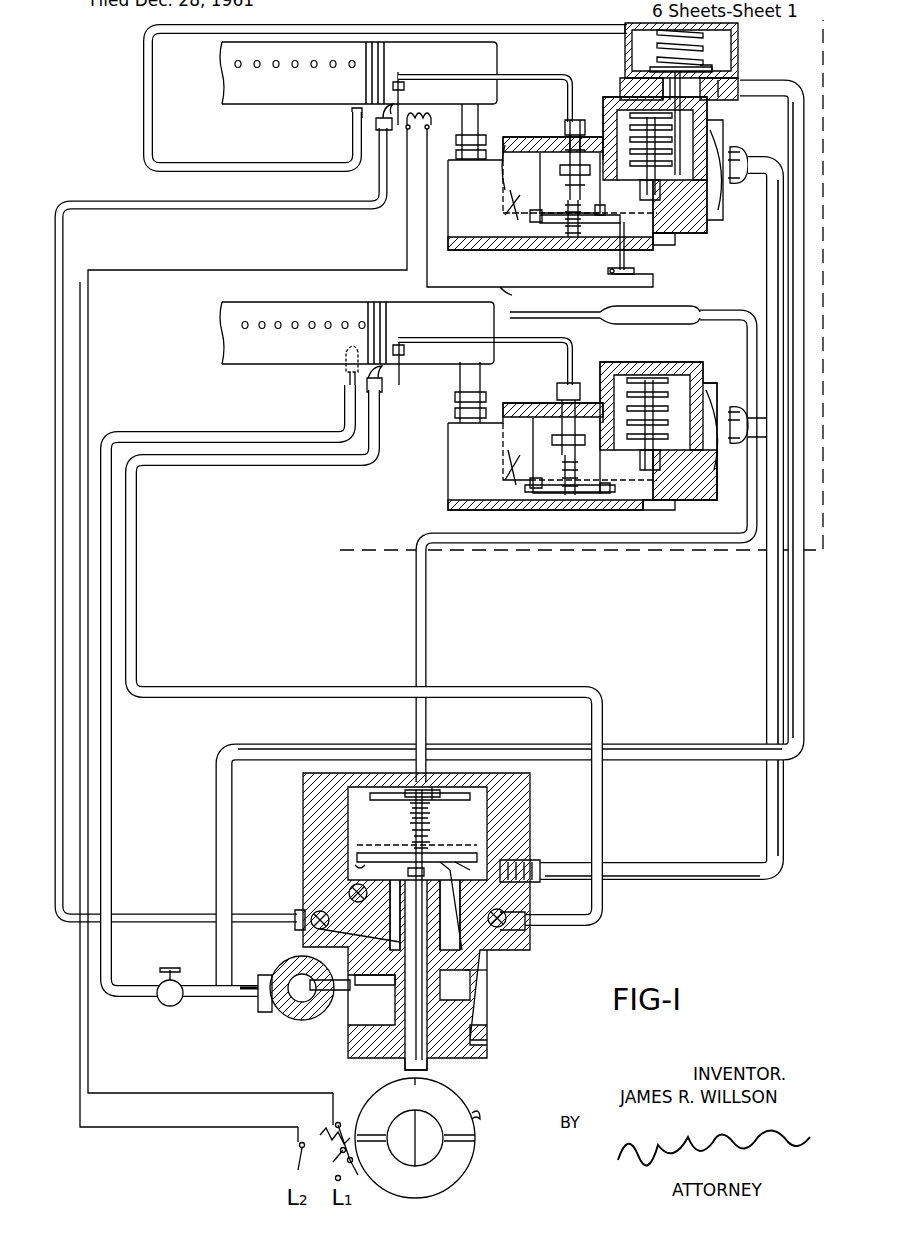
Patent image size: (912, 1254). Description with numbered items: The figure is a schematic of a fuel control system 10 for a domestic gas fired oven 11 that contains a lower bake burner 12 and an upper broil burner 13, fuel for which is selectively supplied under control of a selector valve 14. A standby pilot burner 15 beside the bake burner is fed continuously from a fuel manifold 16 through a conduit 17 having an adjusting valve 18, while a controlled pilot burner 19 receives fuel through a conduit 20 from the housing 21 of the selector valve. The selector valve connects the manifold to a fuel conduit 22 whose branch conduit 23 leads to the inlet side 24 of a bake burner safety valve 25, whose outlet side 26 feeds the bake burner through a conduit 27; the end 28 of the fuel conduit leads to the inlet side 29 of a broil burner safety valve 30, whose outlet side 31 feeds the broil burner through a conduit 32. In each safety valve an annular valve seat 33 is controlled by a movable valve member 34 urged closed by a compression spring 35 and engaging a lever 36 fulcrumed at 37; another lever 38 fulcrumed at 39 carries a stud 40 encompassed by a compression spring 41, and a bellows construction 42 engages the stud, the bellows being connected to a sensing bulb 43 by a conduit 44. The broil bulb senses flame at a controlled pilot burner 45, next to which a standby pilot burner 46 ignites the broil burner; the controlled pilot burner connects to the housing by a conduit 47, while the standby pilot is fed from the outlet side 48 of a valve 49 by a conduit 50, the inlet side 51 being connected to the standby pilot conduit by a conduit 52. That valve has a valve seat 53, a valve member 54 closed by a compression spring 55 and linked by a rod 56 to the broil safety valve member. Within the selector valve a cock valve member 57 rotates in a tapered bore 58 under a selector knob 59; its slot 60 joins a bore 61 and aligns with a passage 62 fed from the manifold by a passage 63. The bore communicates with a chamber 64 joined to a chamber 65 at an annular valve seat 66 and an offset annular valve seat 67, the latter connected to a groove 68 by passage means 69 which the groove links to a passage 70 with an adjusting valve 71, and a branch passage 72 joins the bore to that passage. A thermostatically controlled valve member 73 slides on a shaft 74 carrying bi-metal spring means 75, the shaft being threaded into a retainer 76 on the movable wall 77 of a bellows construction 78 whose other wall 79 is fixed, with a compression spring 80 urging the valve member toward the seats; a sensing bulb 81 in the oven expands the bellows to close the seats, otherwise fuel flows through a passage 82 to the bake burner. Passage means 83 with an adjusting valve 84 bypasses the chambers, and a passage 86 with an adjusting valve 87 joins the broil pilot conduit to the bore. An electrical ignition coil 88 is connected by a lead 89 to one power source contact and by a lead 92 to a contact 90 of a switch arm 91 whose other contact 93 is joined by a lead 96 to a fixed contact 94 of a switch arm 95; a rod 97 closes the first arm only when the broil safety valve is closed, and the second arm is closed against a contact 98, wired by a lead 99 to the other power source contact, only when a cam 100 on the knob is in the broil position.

The fuel control system 10 is at (762, 927).
The gas fired oven 11 is at (665, 552).
The bake burner 12 is at (232, 364).
The broil burner 13 is at (228, 104).
The selector valve 14 is at (540, 1029).
The standby pilot burner 15 is at (347, 386).
The fuel manifold 16 is at (300, 1020).
The conduit 17 is at (112, 812).
The adjusting valve 18 is at (175, 980).
The controlled pilot burner 19 is at (372, 402).
The conduit 20 is at (137, 570).
The housing 21 is at (522, 945).
The fuel conduit 22 is at (766, 614).
The branch conduit 23 is at (748, 398).
The inlet side 24 is at (712, 400).
The bake burner safety valve 25 is at (646, 370).
The outlet side 26 is at (517, 408).
The conduit 27 is at (482, 378).
The end of conduit 28 is at (758, 158).
The inlet side 29 is at (718, 150).
The broil burner safety valve 30 is at (542, 120).
The outlet side 31 is at (503, 140).
The conduit 32 is at (462, 120).
The annular valve seat 33 is at (660, 170).
The movable valve member 34 is at (660, 200).
The compression spring 35 is at (622, 110).
The lever 36 is at (665, 215).
The fulcrum 37 is at (535, 225).
The lever 38 is at (505, 187).
The fulcrum 39 is at (600, 200).
The stud 40 is at (565, 225).
The compression spring 41 is at (562, 205).
The bellows construction 42 is at (540, 158).
The sensing bulb 43 is at (398, 70).
The conduit 44 is at (508, 68).
The controlled pilot burner 45 is at (394, 128).
The standby pilot burner 46 is at (350, 130).
The conduit 47 is at (290, 212).
The outlet side 48 is at (624, 36).
The valve 49 is at (754, 54).
The conduit 50 is at (145, 112).
The inlet side 51 is at (725, 82).
The conduit 52 is at (804, 650).
The annular valve seat 53 is at (702, 72).
The movable valve member 54 is at (695, 64).
The compression spring 55 is at (658, 44).
The rod 56 is at (655, 85).
The cock valve member 57 is at (455, 995).
The tapered bore 58 is at (462, 915).
The selector knob 59 is at (446, 1090).
The slot 60 is at (365, 982).
The longitudinally disposed bore 61 is at (385, 905).
The passage 62 is at (345, 1025).
The passage 63 is at (290, 955).
The chamber 64 is at (445, 868).
The chamber 65 is at (525, 800).
The annular valve seat 66 is at (352, 862).
The annular valve seat 67 is at (458, 860).
The groove 68 is at (437, 1060).
The passage means 69 is at (480, 966).
The passage 70 is at (480, 1010).
The adjusting valve 71 is at (510, 910).
The branch passage 72 is at (460, 975).
The thermostatically controlled valve member 73 is at (372, 852).
The shaft 74 is at (425, 905).
The bi-metal spring means 75 is at (404, 878).
The retainer 76 is at (432, 812).
The movable wall 77 is at (385, 810).
The bellows construction 78 is at (445, 787).
The wall 79 is at (405, 775).
The compression spring 80 is at (432, 836).
The sensing bulb 81 is at (660, 312).
The passage 82 is at (520, 848).
The passage means 83 is at (347, 905).
The adjusting valve 84 is at (350, 887).
The passage 86 is at (345, 940).
The adjusting valve 87 is at (298, 908).
The electrical ignition coil 88 is at (420, 110).
The lead 89 is at (406, 228).
The contact 90 is at (615, 290).
The switch arm 91 is at (630, 268).
The lead 92 is at (497, 256).
The contact 93 is at (615, 273).
The fixed contact 94 is at (333, 1118).
The switch arm 95 is at (352, 1175).
The lead 96 is at (518, 296).
The rod 97 is at (618, 258).
The contact 98 is at (324, 1161).
The lead 99 is at (319, 1158).
The cam 100 is at (480, 1125).